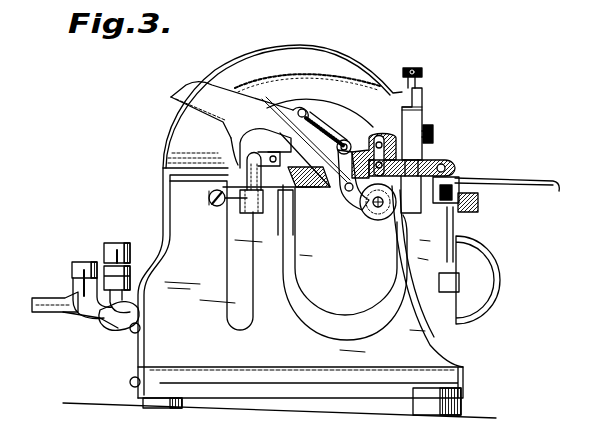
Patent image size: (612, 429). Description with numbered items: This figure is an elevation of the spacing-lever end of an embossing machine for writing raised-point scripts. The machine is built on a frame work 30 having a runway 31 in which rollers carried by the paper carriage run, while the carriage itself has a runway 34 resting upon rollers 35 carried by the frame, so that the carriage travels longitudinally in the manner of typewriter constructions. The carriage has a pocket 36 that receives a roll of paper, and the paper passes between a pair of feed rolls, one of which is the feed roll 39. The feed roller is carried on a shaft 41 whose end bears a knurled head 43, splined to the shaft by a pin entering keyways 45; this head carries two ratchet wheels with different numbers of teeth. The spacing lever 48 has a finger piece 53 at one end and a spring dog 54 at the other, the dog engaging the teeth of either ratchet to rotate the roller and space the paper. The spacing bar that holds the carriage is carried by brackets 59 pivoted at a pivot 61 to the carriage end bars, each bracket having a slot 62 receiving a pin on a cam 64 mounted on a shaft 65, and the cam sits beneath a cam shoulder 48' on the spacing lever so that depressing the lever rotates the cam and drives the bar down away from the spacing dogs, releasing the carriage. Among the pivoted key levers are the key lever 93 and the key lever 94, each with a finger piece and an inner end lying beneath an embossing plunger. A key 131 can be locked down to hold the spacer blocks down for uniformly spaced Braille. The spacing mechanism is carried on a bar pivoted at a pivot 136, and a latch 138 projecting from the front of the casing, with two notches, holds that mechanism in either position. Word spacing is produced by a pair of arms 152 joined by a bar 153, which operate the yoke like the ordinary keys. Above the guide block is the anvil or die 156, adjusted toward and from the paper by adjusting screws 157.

The frame work 30 is at (472, 344).
The runway 31 is at (297, 224).
The runway 34 is at (457, 168).
The rollers 35 is at (449, 193).
The pocket 36 is at (347, 313).
The feed roll 39 is at (359, 157).
The shaft 41 is at (372, 216).
The knurled head 43 is at (364, 212).
The keyways 45 is at (378, 222).
The spacing lever 48 is at (259, 134).
The cam shoulder 48' is at (210, 144).
The finger piece 53 is at (178, 97).
The spring dog 54 is at (345, 201).
The brackets 59 is at (254, 214).
The pivot 61 is at (328, 181).
The slot 62 is at (265, 159).
The cam 64 is at (241, 163).
The shaft 65 is at (246, 201).
The key lever 93 is at (117, 243).
The key lever 94 is at (82, 260).
The key 131 is at (127, 274).
The pivot 136 is at (211, 205).
The latch 138 is at (113, 322).
The arms 152 is at (67, 316).
The bar 153 is at (40, 300).
The anvil or die 156 is at (411, 118).
The adjusting screws 157 is at (418, 68).